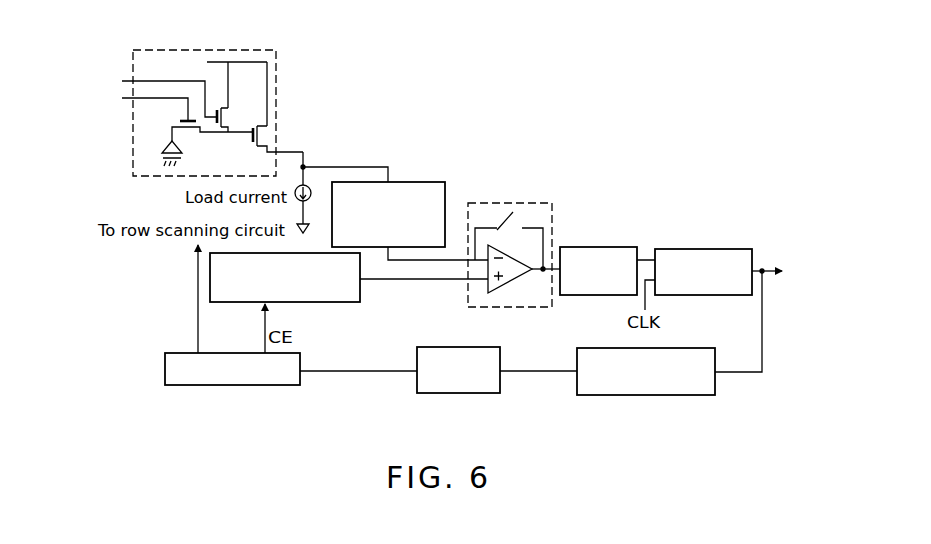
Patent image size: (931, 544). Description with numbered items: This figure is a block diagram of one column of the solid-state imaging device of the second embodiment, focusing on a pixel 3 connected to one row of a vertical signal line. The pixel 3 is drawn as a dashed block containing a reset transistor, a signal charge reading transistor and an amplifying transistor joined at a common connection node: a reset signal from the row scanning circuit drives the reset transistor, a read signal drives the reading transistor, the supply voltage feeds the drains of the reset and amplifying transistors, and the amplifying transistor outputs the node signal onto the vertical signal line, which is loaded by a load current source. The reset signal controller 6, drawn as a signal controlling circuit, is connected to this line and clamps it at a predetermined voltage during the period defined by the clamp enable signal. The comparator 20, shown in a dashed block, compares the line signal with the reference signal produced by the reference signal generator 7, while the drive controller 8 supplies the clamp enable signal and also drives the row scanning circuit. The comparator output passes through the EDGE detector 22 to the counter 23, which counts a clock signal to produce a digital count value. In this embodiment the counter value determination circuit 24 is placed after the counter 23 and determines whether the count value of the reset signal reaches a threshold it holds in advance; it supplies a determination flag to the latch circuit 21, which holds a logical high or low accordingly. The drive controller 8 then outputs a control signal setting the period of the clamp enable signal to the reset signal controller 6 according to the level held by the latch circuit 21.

The pixel 3 is at (253, 50).
The reset signal controller 6 is at (432, 178).
The reference signal generator 7 is at (330, 305).
The drive controller 8 is at (228, 388).
The comparator 20 is at (532, 201).
The latch circuit 21 is at (455, 397).
The EDGE detector 22 is at (602, 247).
The counter 23 is at (704, 248).
The counter value determination circuit 24 is at (637, 397).